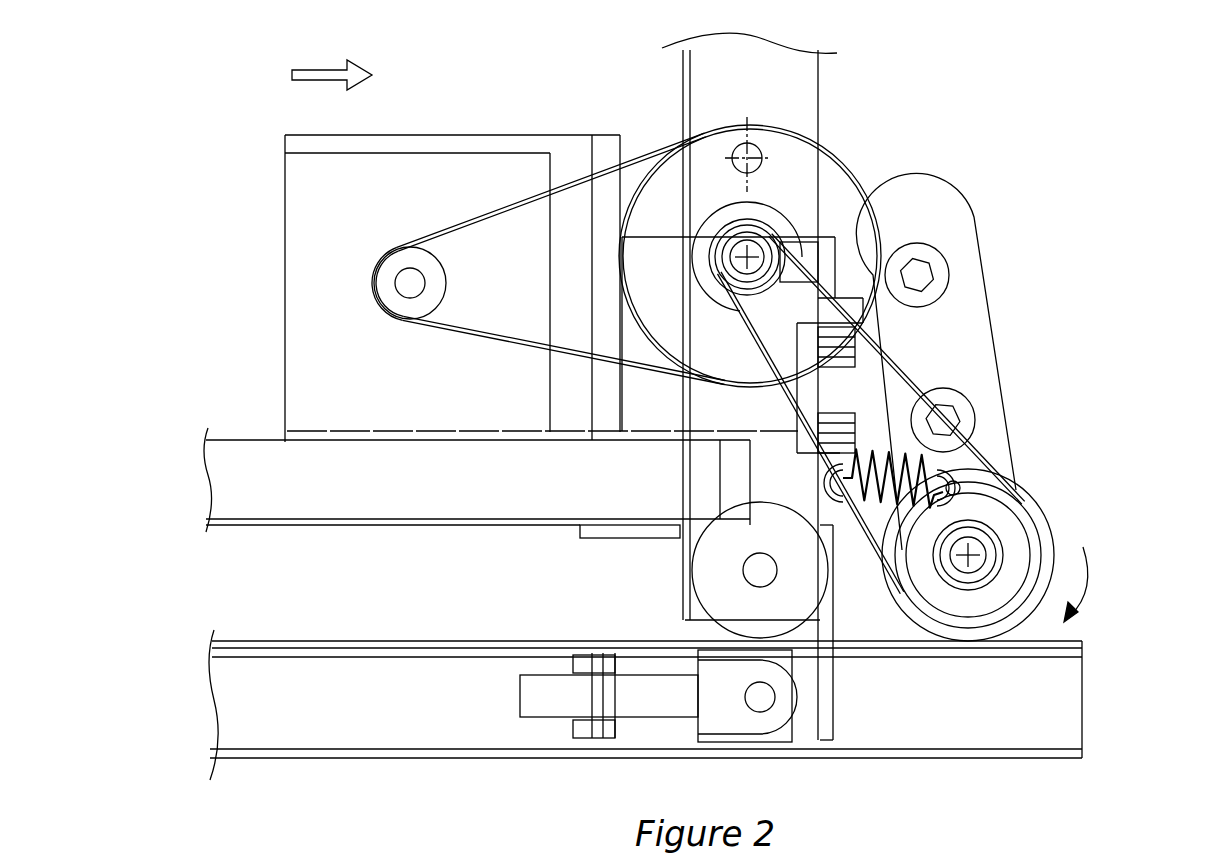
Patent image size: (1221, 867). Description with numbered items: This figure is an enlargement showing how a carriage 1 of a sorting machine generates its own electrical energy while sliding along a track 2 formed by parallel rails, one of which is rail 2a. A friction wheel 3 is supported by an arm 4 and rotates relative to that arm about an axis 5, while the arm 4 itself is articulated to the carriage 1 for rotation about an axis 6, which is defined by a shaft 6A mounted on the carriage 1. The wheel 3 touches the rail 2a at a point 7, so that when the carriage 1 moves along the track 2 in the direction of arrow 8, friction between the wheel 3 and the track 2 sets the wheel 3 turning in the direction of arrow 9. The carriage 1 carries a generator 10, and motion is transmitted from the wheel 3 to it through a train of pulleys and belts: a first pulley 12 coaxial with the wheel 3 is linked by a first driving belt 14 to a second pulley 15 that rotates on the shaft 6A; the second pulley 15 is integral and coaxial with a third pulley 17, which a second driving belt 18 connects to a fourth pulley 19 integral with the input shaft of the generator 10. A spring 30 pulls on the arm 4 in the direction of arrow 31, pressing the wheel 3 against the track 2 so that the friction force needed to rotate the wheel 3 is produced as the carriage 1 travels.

The carriage 1 is at (800, 78).
The track 2 is at (1075, 636).
The rail 2a is at (1067, 732).
The friction wheel 3 is at (1047, 527).
The arm 4 is at (958, 348).
The axis 5 is at (885, 500).
The axis 6 is at (768, 262).
The shaft 6A is at (790, 260).
The point 7 is at (973, 640).
The arrow 8 is at (332, 61).
The arrow 9 is at (1083, 578).
The generator 10 is at (425, 172).
The first pulley 12 is at (1020, 560).
The first driving belt 14 is at (1000, 430).
The second pulley 15 is at (757, 248).
The third pulley 17 is at (777, 152).
The second driving belt 18 is at (568, 180).
The fourth pulley 19 is at (400, 303).
The spring 30 is at (540, 489).
The arrow 31 is at (1005, 470).